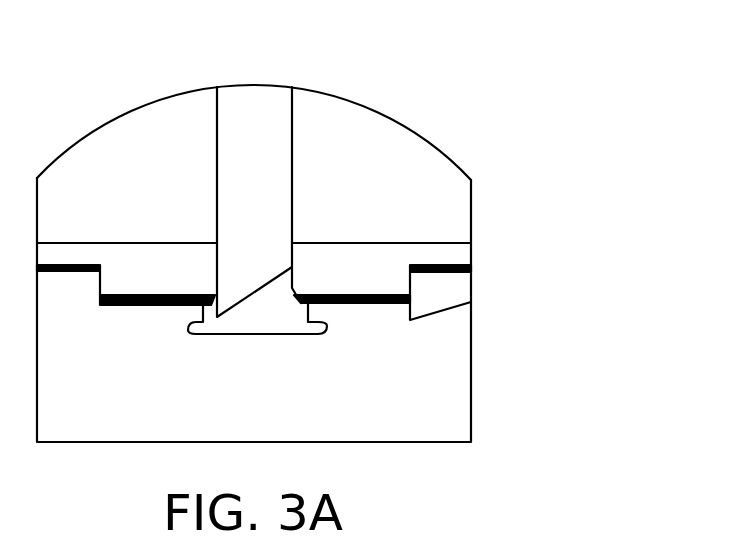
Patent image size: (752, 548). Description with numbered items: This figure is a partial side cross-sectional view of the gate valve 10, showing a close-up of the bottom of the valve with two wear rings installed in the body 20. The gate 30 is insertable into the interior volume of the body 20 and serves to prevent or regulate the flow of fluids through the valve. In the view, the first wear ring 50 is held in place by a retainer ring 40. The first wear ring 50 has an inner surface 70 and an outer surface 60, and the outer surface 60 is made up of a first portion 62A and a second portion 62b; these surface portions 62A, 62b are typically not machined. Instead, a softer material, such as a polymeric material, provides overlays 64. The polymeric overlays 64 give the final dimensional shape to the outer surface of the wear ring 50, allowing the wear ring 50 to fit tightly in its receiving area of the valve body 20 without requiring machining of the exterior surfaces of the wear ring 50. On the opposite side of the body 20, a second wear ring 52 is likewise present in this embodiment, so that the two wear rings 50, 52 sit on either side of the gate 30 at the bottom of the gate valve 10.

The gate valve 10 is at (420, 72).
The body 20 is at (474, 375).
The gate 30 is at (260, 108).
The retainer ring 40 is at (455, 288).
The first wear ring 50 is at (460, 253).
The wear ring 52 is at (178, 262).
The outer surface 60 is at (362, 307).
The first portion 62A is at (378, 307).
The second portion 62b is at (473, 267).
The overlays 64 is at (313, 293).
The inner surface 70 is at (387, 243).